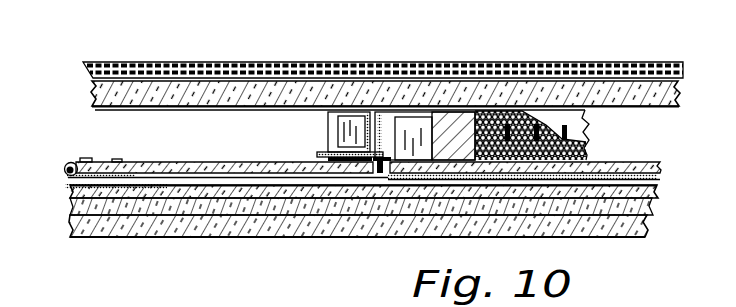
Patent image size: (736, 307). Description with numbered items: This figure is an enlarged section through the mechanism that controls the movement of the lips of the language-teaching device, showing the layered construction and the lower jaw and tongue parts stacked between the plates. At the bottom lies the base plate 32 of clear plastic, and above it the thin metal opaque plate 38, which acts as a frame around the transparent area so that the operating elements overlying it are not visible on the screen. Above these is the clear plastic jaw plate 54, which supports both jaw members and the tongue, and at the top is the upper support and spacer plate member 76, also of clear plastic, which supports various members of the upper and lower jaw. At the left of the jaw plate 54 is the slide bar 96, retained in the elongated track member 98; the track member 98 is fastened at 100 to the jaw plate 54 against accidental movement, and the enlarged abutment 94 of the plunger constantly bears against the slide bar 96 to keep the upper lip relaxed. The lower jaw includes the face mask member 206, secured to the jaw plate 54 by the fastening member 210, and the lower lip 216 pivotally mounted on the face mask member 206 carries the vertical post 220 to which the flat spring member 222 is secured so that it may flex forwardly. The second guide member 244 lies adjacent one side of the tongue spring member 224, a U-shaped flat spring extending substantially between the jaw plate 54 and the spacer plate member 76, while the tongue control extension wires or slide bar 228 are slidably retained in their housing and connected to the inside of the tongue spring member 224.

The upper support and spacer plate member 76 is at (222, 97).
The vertical post 220 is at (334, 112).
The flat spring member 222 is at (355, 123).
The second guide member 244 is at (448, 127).
The tongue spring member 224 is at (475, 112).
The tongue control extension wires or slide bar 228 is at (585, 110).
The lower lip 216 is at (322, 151).
The face mask member 206 is at (348, 162).
The fastening member 210 is at (368, 175).
The clear plastic jaw plate 54 is at (217, 168).
The slide bar 96 is at (73, 162).
The elongated track member 98 is at (63, 174).
The enlarged abutment 94 is at (89, 161).
The fastening of the track member 100 is at (118, 161).
The thin metal opaque plate 38 is at (145, 186).
The base plate 32 is at (192, 224).